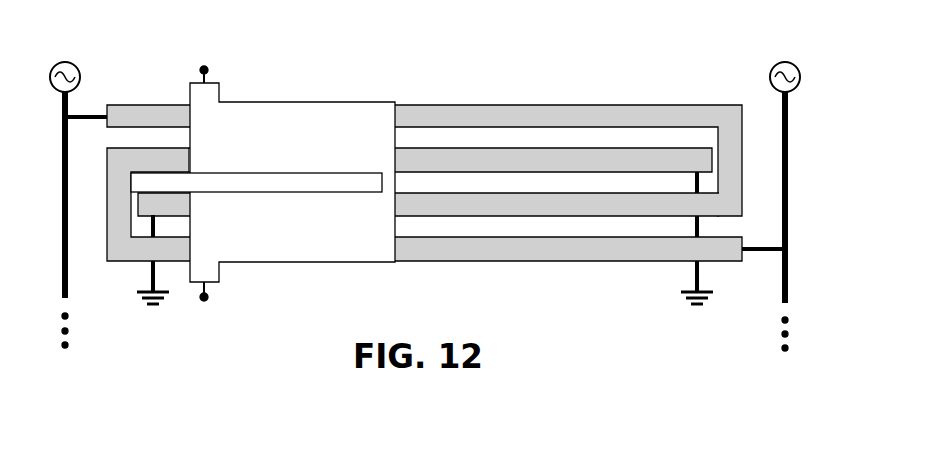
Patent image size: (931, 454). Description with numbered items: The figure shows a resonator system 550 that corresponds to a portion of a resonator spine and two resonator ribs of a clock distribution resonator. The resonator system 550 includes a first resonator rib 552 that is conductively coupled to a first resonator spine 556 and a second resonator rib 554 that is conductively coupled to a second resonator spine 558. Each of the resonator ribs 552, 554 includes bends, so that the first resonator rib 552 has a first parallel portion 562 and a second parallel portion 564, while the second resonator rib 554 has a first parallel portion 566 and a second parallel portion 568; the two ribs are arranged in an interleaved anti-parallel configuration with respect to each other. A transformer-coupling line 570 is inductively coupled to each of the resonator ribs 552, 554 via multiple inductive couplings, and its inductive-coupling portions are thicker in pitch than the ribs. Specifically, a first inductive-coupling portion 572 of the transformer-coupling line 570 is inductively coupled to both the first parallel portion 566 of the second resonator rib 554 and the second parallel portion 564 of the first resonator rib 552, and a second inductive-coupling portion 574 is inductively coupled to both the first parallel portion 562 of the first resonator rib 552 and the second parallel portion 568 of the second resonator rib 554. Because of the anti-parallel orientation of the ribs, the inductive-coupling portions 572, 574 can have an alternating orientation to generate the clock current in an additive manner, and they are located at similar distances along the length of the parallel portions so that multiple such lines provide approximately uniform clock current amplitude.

The resonator system 550 is at (123, 34).
The first resonator rib 552 is at (478, 95).
The second resonator rib 554 is at (476, 268).
The first resonator spine 556 is at (68, 280).
The second resonator spine 558 is at (782, 290).
The first parallel portion of the first resonator rib 562 is at (594, 105).
The second parallel portion of the first resonator rib 564 is at (594, 192).
The first parallel portion of the second resonator rib 566 is at (594, 237).
The second parallel portion of the second resonator rib 568 is at (594, 148).
The transformer-coupling line 570 is at (297, 88).
The first inductive-coupling portion 572 is at (310, 147).
The second inductive-coupling portion 574 is at (310, 235).